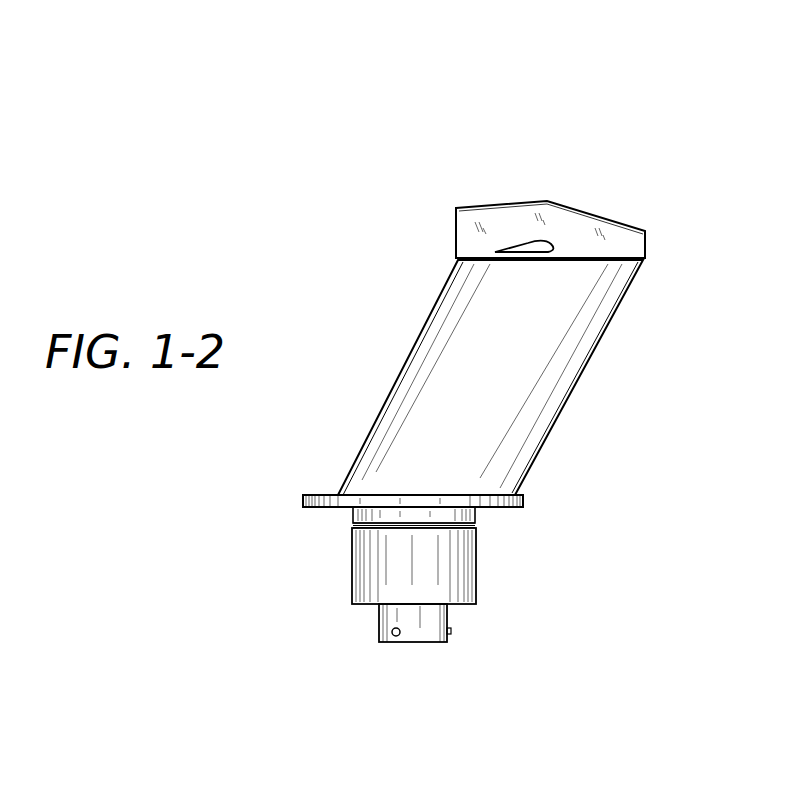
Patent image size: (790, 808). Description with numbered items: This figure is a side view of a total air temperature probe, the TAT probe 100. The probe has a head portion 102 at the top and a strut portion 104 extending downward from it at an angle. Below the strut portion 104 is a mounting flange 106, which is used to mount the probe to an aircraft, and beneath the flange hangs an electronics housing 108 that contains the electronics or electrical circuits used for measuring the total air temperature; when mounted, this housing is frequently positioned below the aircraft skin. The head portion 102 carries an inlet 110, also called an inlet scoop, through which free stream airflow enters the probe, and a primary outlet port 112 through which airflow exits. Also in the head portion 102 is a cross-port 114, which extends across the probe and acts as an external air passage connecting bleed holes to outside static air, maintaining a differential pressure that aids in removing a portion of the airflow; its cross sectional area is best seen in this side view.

The TAT probe 100 is at (567, 152).
The head portion 102 is at (582, 208).
The strut portion 104 is at (580, 350).
The mounting flange 106 is at (523, 497).
The electronics housing 108 is at (467, 572).
The inlet 110 is at (456, 237).
The primary outlet port 112 is at (645, 243).
The cross-port 114 is at (520, 246).